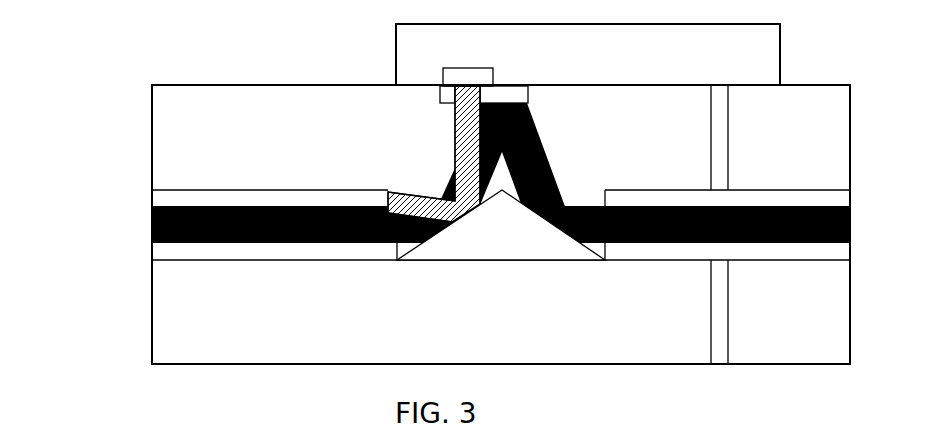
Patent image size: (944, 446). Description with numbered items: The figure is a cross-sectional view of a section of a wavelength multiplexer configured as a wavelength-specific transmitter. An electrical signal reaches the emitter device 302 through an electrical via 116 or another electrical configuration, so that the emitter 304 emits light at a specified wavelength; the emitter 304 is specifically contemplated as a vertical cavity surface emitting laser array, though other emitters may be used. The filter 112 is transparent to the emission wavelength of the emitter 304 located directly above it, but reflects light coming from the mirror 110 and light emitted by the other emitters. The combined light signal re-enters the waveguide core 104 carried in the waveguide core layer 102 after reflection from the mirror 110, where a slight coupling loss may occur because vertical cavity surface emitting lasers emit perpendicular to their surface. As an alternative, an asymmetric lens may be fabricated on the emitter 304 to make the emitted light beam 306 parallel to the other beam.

The waveguide core layer 102 is at (152, 192).
The beam 104 is at (152, 228).
The two-sided mirror structure 110 is at (502, 261).
The dielectric filter 112 is at (528, 102).
The electrical via 116 is at (711, 313).
The emitter device 302 is at (396, 45).
The emitter 304 is at (493, 80).
The emitted light beam 306 is at (455, 138).